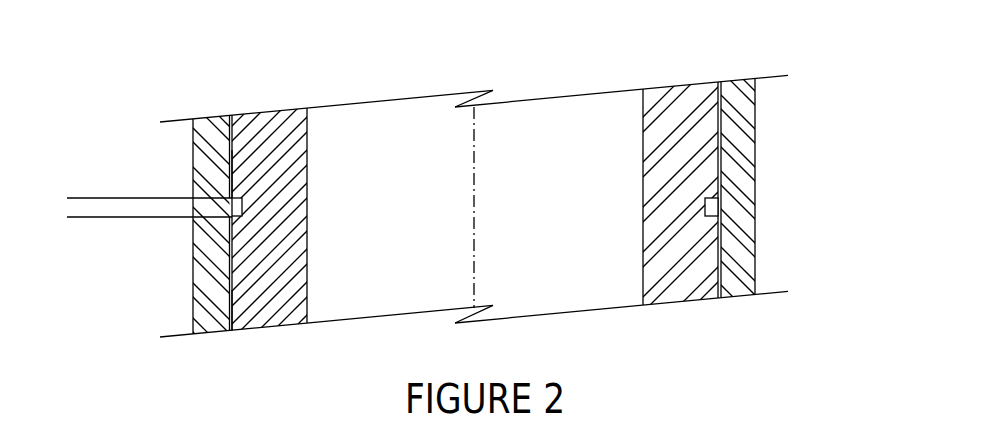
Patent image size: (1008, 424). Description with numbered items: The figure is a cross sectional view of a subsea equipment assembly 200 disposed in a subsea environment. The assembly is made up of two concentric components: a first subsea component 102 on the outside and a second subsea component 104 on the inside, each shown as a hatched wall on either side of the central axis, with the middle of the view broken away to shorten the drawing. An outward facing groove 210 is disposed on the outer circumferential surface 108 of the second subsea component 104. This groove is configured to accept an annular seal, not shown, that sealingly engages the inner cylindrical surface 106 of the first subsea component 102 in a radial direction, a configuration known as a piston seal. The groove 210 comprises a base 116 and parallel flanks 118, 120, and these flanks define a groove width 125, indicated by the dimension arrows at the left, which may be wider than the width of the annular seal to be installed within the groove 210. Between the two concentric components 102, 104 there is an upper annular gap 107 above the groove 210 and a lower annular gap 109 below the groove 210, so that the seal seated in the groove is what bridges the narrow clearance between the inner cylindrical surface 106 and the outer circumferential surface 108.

The subsea equipment assembly 200 is at (818, 61).
The first subsea component 102 is at (771, 196).
The second subsea component 104 is at (734, 208).
The outward facing groove 210 is at (814, 184).
The inner cylindrical surface 106 is at (269, 212).
The upper annular gap 107 is at (301, 127).
The outer circumferential surface 108 is at (181, 227).
The lower annular gap 109 is at (298, 326).
The base 116 is at (299, 217).
The flank 118 is at (301, 168).
The flank 120 is at (297, 273).
The groove width 125 is at (83, 250).